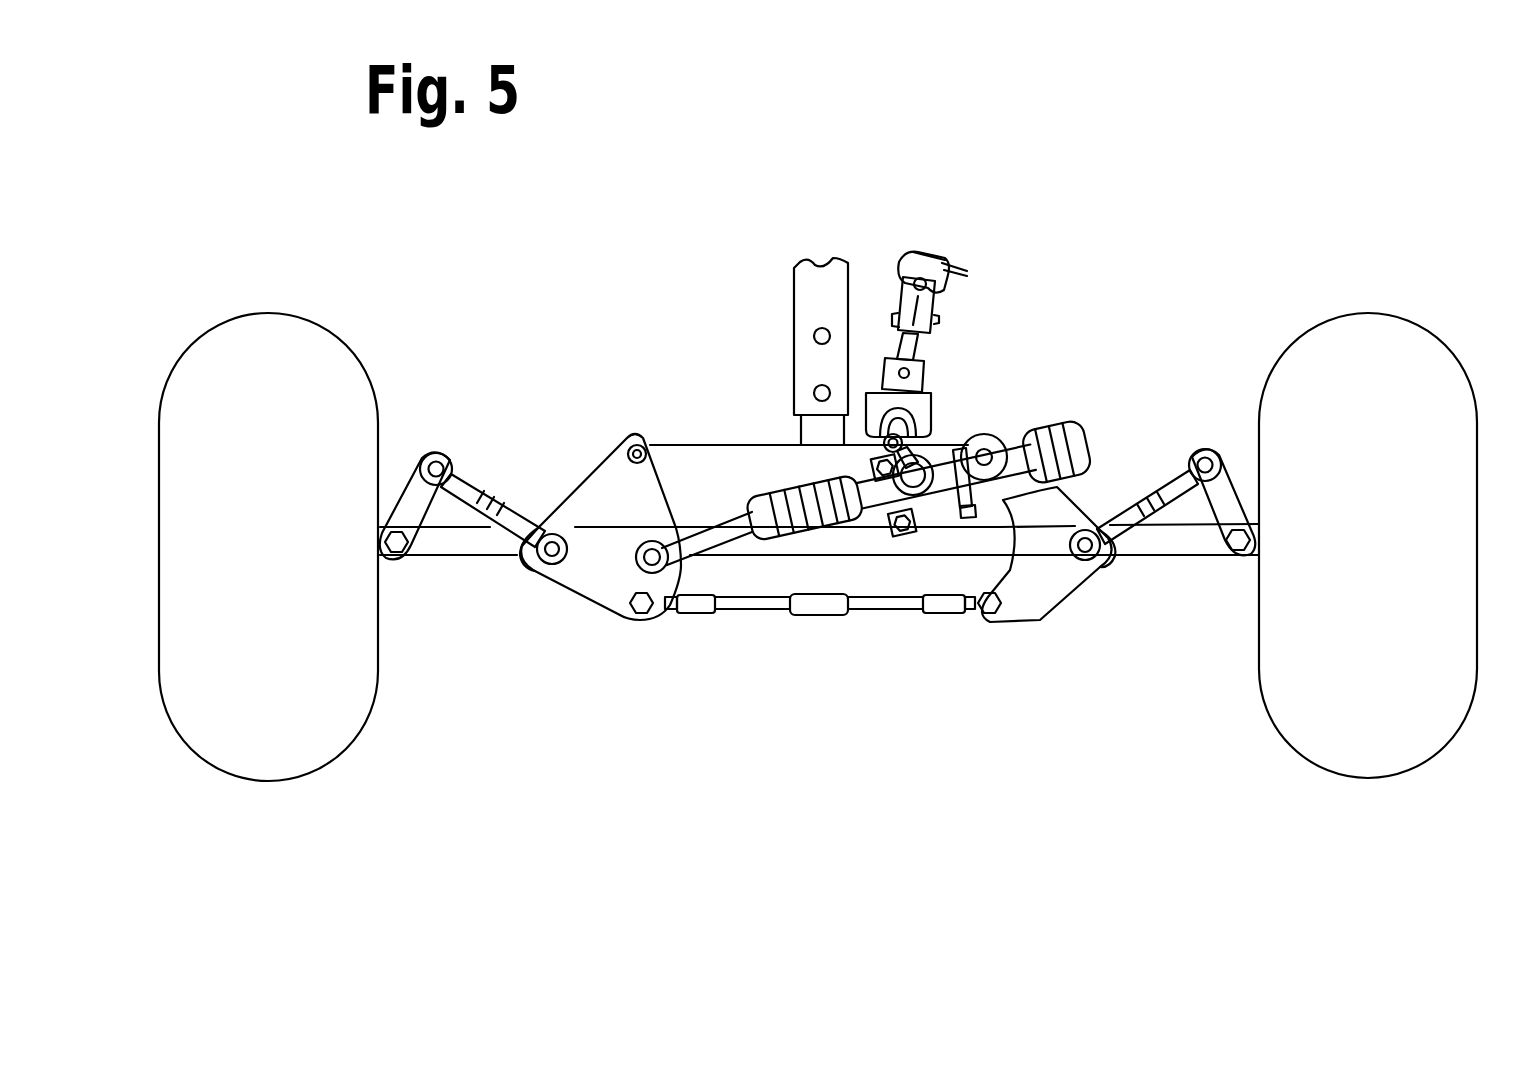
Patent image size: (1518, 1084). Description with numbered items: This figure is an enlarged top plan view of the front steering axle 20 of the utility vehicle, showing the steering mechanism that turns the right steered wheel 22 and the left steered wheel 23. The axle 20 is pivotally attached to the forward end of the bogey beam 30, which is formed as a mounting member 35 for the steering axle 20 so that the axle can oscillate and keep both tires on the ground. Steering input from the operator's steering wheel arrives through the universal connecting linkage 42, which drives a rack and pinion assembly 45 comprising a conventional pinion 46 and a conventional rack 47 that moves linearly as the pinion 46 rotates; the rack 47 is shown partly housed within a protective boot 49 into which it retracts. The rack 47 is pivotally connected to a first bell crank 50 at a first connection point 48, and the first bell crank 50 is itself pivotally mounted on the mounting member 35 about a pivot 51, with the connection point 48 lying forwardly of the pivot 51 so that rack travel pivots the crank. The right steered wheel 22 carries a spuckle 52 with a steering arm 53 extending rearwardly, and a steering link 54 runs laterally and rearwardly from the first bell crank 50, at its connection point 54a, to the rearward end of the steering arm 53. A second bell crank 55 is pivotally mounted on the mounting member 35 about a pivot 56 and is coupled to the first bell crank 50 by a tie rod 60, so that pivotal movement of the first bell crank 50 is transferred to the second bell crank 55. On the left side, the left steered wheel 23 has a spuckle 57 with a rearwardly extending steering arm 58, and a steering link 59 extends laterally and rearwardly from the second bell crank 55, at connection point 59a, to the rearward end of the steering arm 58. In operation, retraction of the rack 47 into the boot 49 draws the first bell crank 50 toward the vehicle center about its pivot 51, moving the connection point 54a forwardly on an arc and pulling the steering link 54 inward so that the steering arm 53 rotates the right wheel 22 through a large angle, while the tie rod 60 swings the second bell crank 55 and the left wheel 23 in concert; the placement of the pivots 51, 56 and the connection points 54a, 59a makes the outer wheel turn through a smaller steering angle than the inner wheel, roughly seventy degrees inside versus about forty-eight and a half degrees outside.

The front steering axle 20 is at (457, 548).
The right steered wheel 22 is at (305, 779).
The left steered wheel 23 is at (1357, 778).
The bogey beam 30 is at (808, 262).
The mounting member 35 is at (715, 456).
The universal connecting linkage 42 is at (935, 307).
The rack and pinion assembly 45 is at (1078, 410).
The pinion 46 is at (945, 430).
The rack 47 is at (675, 512).
The first connection point 48 is at (683, 617).
The protective boot 49 is at (1090, 452).
The first bell crank 50 is at (618, 615).
The pivot 51 is at (632, 440).
The spuckle 52 is at (387, 563).
The steering arm 53 is at (412, 485).
The steering link 54 is at (470, 490).
The connection point 54a is at (530, 563).
The second bell crank 55 is at (1013, 600).
The pivot 56 is at (987, 447).
The spuckle 57 is at (1260, 558).
The steering arm 58 is at (1233, 508).
The steering link 59 is at (1183, 452).
The connection point 59a is at (1092, 565).
The tie rod 60 is at (837, 615).